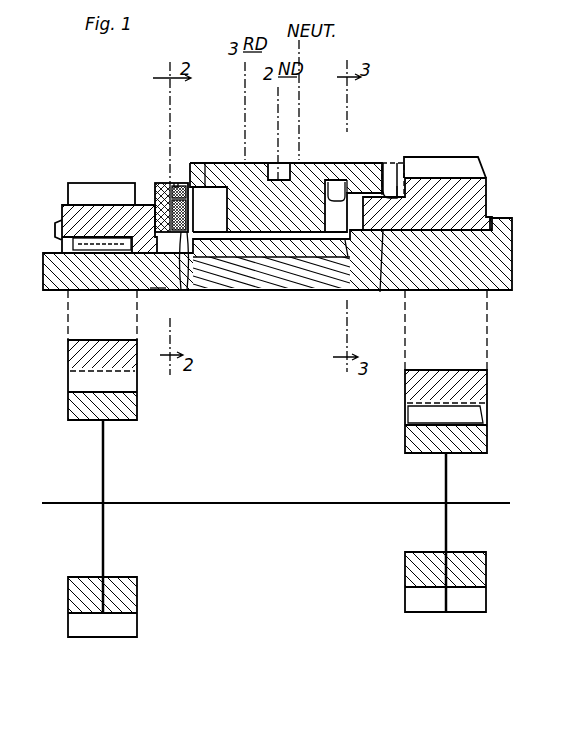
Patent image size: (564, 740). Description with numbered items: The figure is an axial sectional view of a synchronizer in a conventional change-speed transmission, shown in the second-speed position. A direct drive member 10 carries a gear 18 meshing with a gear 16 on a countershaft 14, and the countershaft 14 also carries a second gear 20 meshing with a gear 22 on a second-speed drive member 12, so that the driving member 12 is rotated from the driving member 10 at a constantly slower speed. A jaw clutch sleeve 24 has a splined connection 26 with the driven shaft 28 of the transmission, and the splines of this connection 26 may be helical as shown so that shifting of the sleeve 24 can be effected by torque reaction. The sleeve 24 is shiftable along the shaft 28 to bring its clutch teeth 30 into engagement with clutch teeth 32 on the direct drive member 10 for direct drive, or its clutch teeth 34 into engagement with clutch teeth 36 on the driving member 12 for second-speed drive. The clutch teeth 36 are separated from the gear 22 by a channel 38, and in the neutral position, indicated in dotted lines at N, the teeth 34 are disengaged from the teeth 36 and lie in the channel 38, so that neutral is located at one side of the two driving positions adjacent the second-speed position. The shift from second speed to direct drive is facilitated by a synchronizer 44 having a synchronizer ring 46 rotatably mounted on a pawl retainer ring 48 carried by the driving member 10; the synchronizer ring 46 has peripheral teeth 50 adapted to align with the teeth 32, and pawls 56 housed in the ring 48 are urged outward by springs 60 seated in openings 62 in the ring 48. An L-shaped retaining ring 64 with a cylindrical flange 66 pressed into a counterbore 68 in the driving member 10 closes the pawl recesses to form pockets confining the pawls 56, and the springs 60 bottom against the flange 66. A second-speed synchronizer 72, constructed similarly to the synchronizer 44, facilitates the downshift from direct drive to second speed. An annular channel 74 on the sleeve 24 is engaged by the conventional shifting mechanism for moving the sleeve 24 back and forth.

The direct drive member 10 is at (75, 217).
The second-speed drive member 12 is at (484, 195).
The countershaft 14 is at (296, 487).
The gear 16 is at (78, 408).
The gear 18 is at (75, 182).
The second gear 20 is at (478, 440).
The gear 22 is at (472, 158).
The jaw clutch sleeve 24 is at (308, 162).
The splined connection 26 is at (251, 262).
The driven shaft 28 is at (494, 244).
The clutch teeth 30 is at (197, 182).
The clutch teeth 32 is at (165, 182).
The clutch teeth 34 is at (387, 194).
The clutch teeth 36 is at (386, 273).
The channel 38 is at (399, 190).
The synchronizer 44 is at (179, 172).
The synchronizer ring 46 is at (163, 196).
The pawl retainer ring 48 is at (134, 205).
The peripheral teeth 50 is at (184, 196).
The pawls 56 is at (157, 212).
The springs 60 is at (350, 248).
The openings 62 is at (184, 213).
The retaining ring 64 is at (335, 188).
The cylindrical flange 66 is at (179, 291).
The counterbore 68 is at (157, 290).
The second-speed synchronizer 72 is at (353, 181).
The annular channel 74 is at (270, 164).
The neutral position N is at (397, 164).